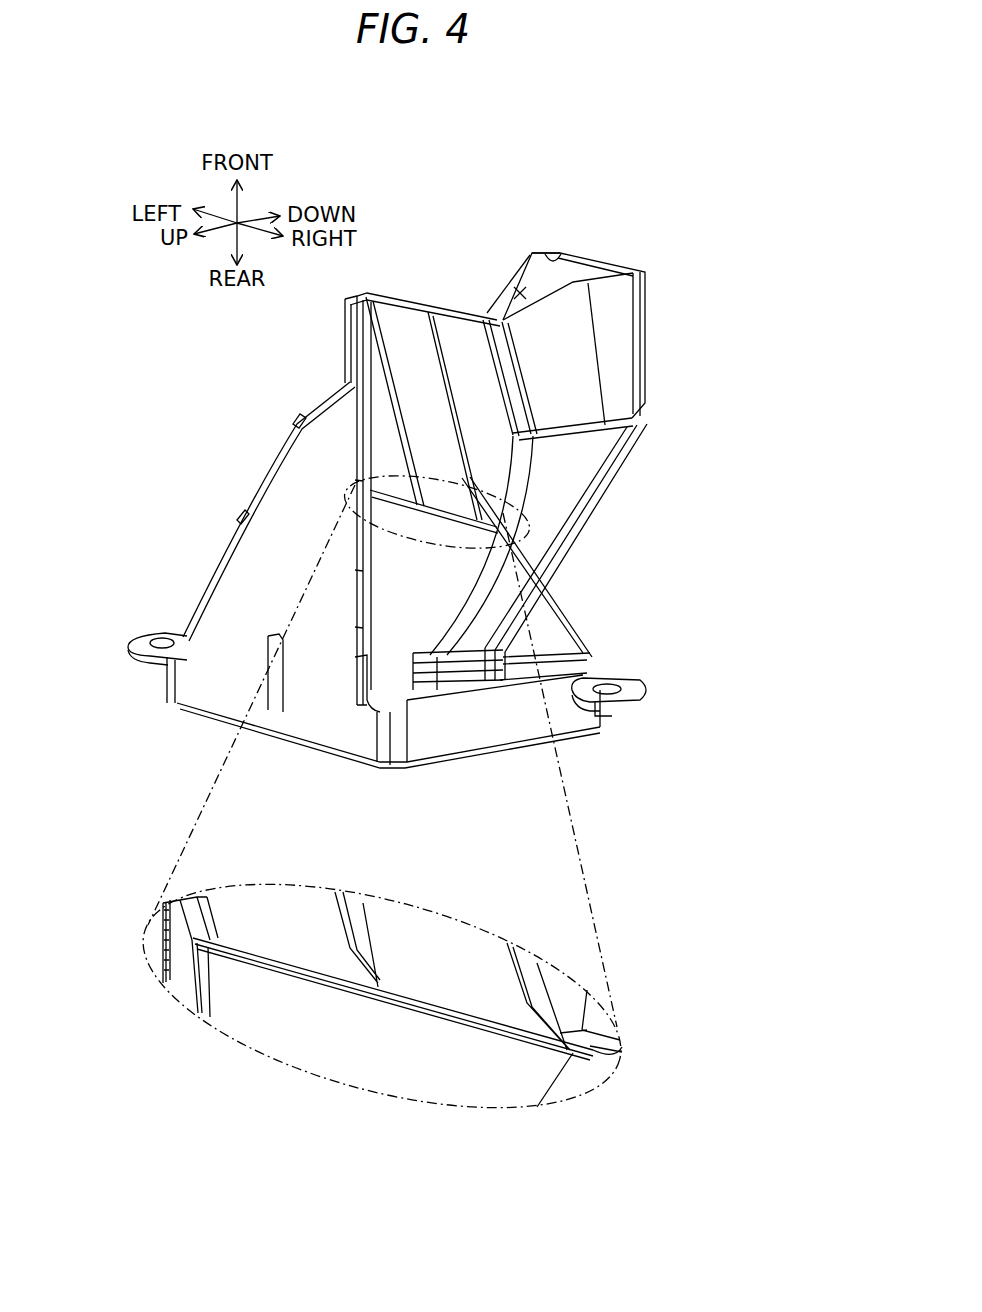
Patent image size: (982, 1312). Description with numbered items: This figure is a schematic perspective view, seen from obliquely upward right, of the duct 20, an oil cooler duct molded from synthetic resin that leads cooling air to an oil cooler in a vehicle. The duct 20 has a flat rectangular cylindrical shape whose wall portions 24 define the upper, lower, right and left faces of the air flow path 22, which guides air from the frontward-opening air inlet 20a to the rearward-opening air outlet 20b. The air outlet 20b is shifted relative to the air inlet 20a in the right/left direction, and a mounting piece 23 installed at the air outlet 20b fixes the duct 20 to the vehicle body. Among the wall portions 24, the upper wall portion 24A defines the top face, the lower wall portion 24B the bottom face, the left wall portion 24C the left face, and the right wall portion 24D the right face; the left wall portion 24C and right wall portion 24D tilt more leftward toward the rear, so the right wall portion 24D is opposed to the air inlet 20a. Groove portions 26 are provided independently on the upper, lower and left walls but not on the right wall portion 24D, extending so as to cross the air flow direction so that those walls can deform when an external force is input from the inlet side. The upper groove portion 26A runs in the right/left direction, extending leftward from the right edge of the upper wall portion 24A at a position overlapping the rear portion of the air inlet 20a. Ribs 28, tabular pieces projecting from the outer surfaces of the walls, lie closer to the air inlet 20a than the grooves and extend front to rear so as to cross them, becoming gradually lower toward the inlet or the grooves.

The duct 20 is at (641, 222).
The air inlet 20a is at (547, 257).
The air outlet 20b is at (430, 763).
The air flow path 22 is at (520, 293).
The mounting piece 23 is at (143, 630).
The wall portions 24 is at (477, 724).
The upper wall portion 24A is at (427, 587).
The lower wall portion 24B is at (653, 330).
The left wall portion 24C is at (263, 467).
The right wall portion 24D is at (604, 460).
The groove portions 26 is at (456, 845).
The upper groove portion 26A is at (490, 505).
The ribs 28 is at (385, 355).